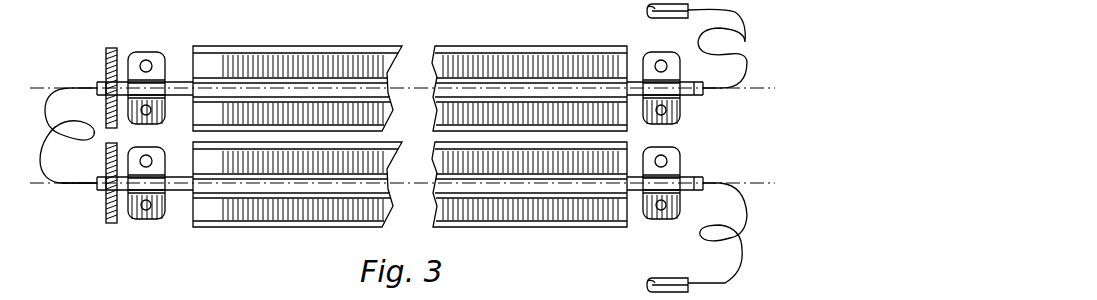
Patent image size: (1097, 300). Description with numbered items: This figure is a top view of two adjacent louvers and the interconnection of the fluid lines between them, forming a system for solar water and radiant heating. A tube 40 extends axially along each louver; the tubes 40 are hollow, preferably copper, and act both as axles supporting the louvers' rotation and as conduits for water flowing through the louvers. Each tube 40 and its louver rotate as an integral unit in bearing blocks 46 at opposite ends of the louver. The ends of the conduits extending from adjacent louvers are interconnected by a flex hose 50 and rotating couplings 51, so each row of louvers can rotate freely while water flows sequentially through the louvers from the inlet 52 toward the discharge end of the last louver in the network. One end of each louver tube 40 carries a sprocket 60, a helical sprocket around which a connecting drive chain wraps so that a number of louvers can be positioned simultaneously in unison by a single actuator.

The tube 40 is at (518, 97).
The bearing block 46 is at (146, 52).
The flex hose 50 is at (397, 93).
The rotating coupling 51 is at (100, 187).
The inlet 52 is at (715, 237).
The sprocket 60 is at (108, 54).